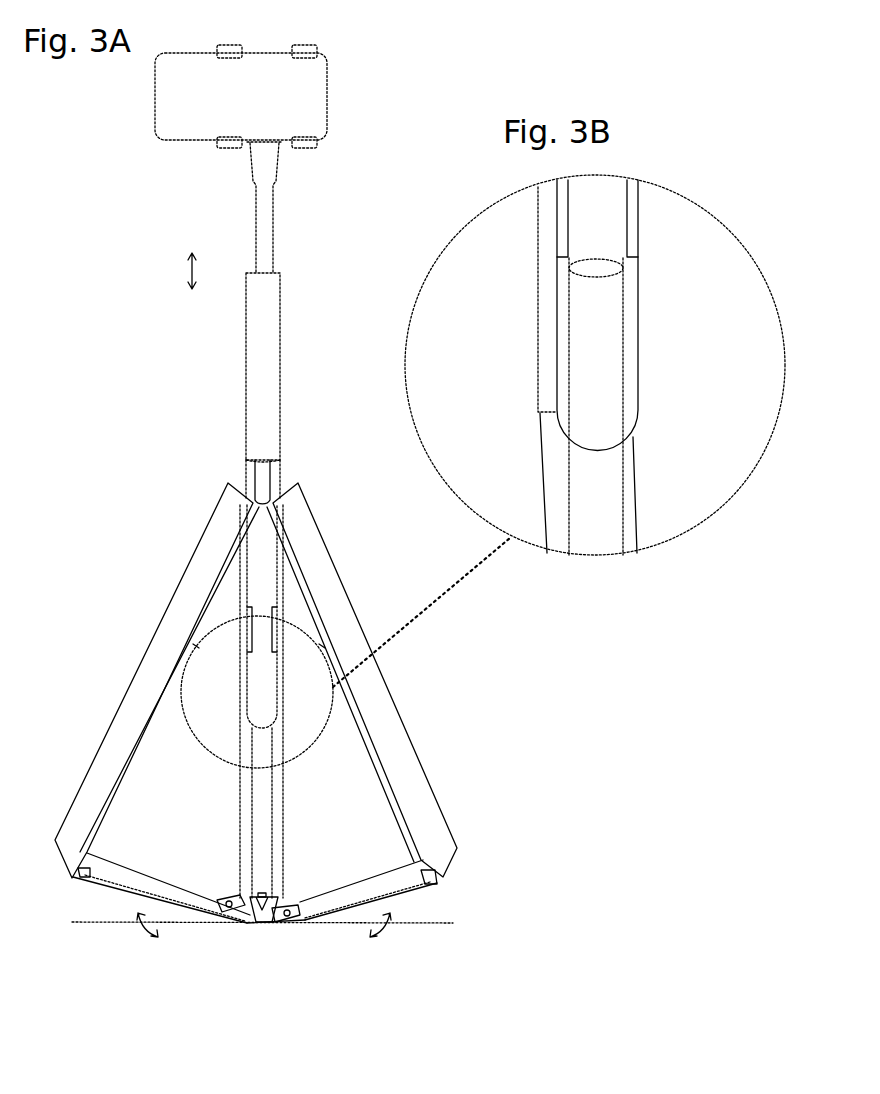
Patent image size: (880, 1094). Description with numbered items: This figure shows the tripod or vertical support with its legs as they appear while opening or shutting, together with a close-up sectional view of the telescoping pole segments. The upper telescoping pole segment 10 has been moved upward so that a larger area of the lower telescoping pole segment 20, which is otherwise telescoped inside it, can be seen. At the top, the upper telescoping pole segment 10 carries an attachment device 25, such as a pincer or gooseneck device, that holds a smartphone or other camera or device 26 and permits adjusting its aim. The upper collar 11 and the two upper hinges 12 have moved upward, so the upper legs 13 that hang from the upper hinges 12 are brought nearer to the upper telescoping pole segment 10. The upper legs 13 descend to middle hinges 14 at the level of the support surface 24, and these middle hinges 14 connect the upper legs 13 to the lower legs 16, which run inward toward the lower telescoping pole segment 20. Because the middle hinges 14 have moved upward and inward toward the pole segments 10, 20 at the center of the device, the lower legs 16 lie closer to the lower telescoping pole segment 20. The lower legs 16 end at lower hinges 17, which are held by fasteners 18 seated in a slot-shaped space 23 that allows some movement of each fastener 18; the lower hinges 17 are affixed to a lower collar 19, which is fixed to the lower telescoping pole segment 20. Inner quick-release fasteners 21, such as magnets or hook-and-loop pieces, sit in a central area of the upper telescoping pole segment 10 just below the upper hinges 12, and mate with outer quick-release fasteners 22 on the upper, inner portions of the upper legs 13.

In FIG. 3A, the upper telescoping pole segment 10 is at (283, 437).
In FIG. 3B, the upper telescoping pole segment 10 is at (632, 410).
In FIG. 3A, the upper collar 11 is at (255, 461).
In FIG. 3A, the upper hinges 12 is at (272, 475).
In FIG. 3A, the upper legs 13 is at (299, 507).
In FIG. 3B, the upper legs 13 is at (538, 244).
In FIG. 3A, the middle hinges 14 is at (86, 880).
In FIG. 3A, the lower legs 16 is at (137, 868).
In FIG. 3B, the lower legs 16 is at (554, 499).
In FIG. 3A, the lower hinges 17 is at (250, 900).
In FIG. 3A, the fasteners 18 is at (222, 898).
In FIG. 3A, the lower collar 19 is at (258, 896).
In FIG. 3A, the lower telescoping pole segment 20 is at (280, 778).
In FIG. 3B, the lower telescoping pole segment 20 is at (607, 518).
In FIG. 3A, the inner quick-release fasteners 21 is at (273, 626).
In FIG. 3B, the inner quick-release fasteners 21 is at (563, 213).
In FIG. 3A, the outer quick-release fasteners 22 is at (195, 647).
In FIG. 3A, the slot-shaped space 23 is at (264, 918).
In FIG. 3A, the support surface 24 is at (453, 923).
In FIG. 3A, the attachment device 25 is at (292, 48).
In FIG. 3A, the smartphone or other camera or device 26 is at (196, 130).